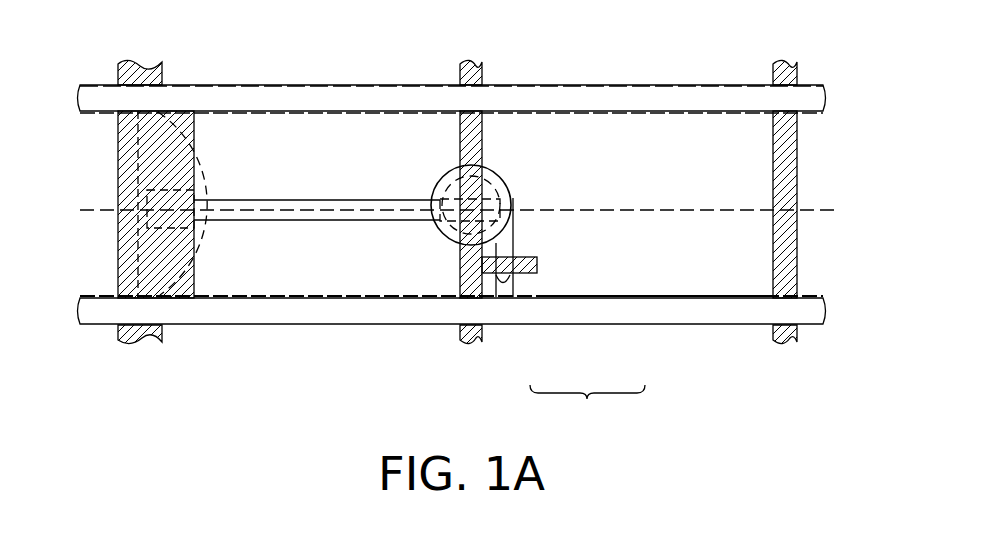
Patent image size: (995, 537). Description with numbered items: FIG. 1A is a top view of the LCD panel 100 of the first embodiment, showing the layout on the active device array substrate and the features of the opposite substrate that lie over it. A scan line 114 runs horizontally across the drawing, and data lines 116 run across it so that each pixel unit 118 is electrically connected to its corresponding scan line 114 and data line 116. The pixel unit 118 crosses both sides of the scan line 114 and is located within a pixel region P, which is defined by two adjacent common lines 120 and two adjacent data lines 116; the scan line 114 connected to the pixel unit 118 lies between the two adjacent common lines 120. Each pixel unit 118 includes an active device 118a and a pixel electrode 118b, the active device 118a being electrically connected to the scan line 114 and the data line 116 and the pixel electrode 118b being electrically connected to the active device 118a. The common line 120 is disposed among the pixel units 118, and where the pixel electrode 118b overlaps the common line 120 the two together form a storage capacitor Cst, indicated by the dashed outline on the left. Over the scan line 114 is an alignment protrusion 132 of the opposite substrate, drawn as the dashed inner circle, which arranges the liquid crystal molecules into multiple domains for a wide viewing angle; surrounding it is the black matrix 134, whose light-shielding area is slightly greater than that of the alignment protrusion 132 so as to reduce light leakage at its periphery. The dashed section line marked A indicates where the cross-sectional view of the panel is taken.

The LCD panel 100 is at (842, 421).
The scan line 114 is at (467, 275).
The data line 116 is at (273, 313).
The pixel unit 118 is at (587, 408).
The active device 118a is at (495, 243).
The pixel electrode 118b is at (618, 263).
The common line 120 is at (117, 268).
The alignment protrusion 132 is at (490, 190).
The black matrix 134 is at (503, 173).
The storage capacitor Cst is at (118, 157).
The pixel region P is at (338, 174).
The section line A-A' A is at (463, 210).